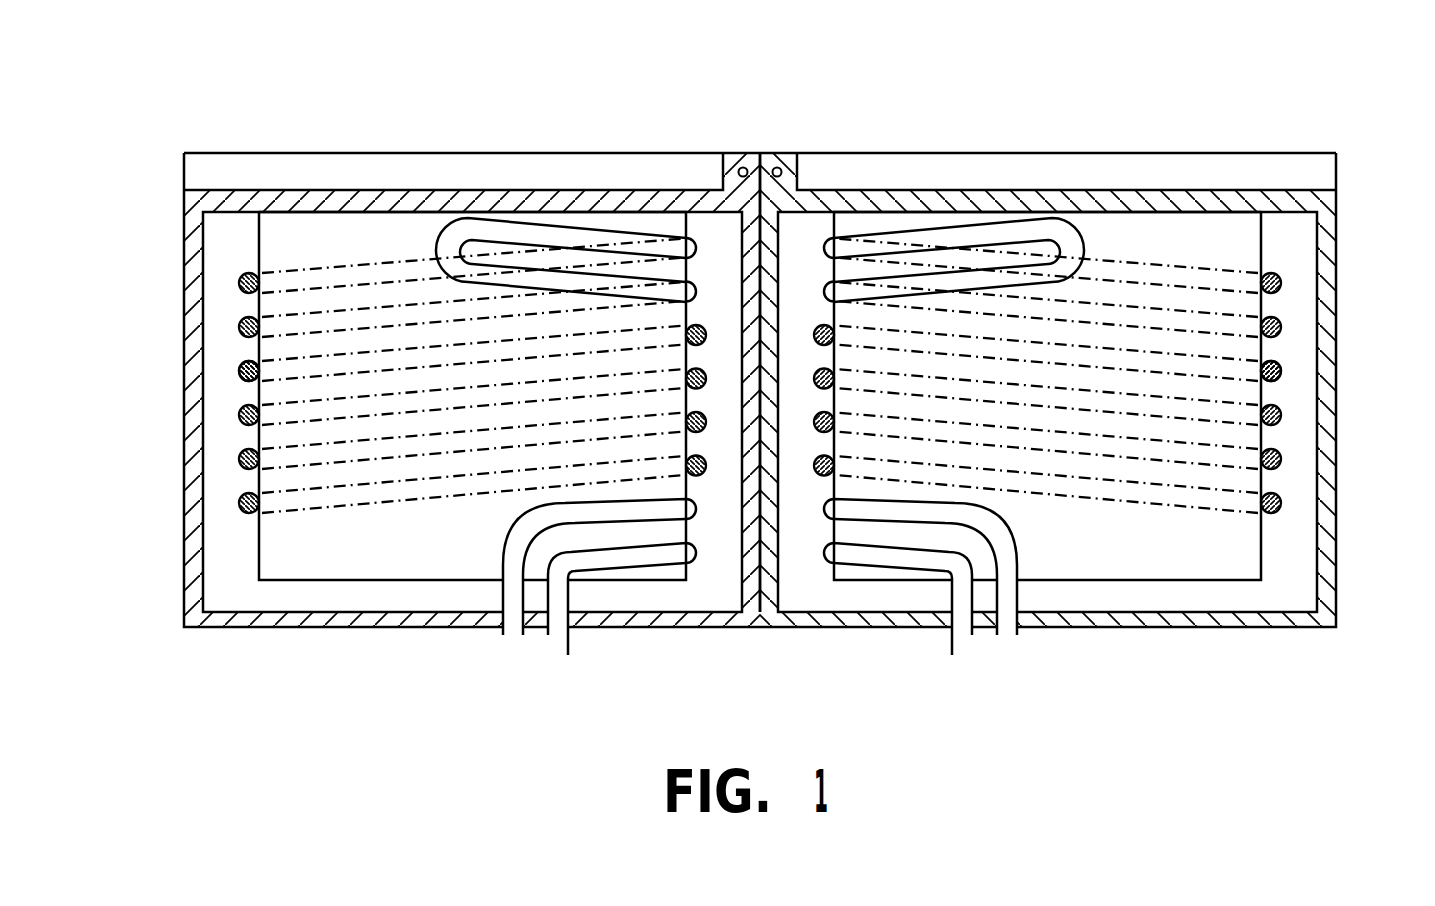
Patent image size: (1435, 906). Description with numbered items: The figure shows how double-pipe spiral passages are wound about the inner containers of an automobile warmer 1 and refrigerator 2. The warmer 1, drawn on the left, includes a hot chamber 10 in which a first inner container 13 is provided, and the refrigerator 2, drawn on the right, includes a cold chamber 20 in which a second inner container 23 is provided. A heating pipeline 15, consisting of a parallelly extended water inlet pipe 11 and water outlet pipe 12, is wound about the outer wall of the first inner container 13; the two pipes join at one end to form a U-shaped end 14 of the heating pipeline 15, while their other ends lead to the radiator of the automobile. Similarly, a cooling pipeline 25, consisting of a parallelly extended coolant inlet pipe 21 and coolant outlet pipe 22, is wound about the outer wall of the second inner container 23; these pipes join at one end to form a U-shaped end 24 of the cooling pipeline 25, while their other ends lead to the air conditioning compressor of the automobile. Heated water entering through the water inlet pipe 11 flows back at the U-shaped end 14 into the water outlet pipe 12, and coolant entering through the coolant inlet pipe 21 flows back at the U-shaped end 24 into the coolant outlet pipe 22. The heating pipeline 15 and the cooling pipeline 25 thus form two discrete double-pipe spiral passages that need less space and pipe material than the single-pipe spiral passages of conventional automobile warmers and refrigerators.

The warmer 1 is at (364, 147).
The refrigerator 2 is at (1092, 146).
The hot chamber 10 is at (318, 237).
The water inlet pipe 11 is at (558, 637).
The water outlet pipe 12 is at (512, 632).
The first inner container 13 is at (248, 252).
The U-shaped end 14 is at (464, 238).
The heating pipeline 15 is at (242, 372).
The cold chamber 20 is at (1203, 235).
The coolant inlet pipe 21 is at (957, 643).
The coolant outlet pipe 22 is at (1003, 632).
The second inner container 23 is at (1298, 248).
The U-shaped end 24 is at (1060, 237).
The cooling pipeline 25 is at (1283, 410).